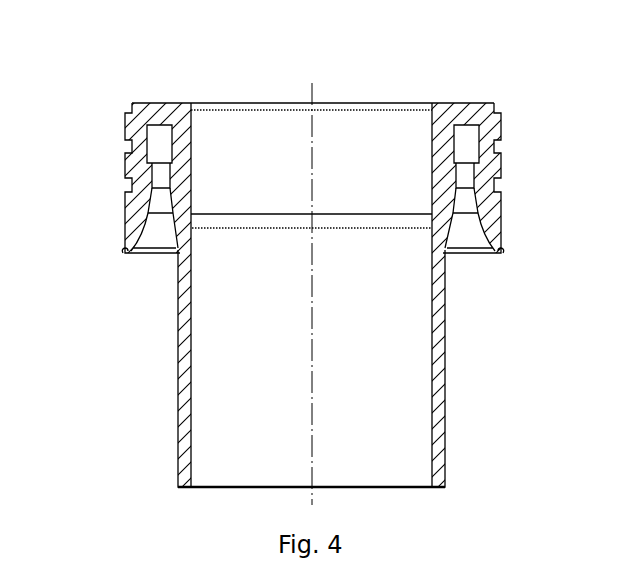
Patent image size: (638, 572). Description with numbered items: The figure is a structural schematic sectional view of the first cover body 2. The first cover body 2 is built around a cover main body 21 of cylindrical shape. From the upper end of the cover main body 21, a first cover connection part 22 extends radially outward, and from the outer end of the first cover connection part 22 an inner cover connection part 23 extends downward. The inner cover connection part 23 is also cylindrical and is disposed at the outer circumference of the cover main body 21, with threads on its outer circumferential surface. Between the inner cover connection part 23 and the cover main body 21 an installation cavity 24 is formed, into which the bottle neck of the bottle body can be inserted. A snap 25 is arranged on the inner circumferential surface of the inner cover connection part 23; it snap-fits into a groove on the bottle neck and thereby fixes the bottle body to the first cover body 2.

The first cover body 2 is at (97, 110).
The cover main body 21 is at (447, 403).
The first cover connection part 22 is at (453, 120).
The inner cover connection part 23 is at (483, 147).
The installation cavity 24 is at (462, 217).
The snap 25 is at (487, 172).